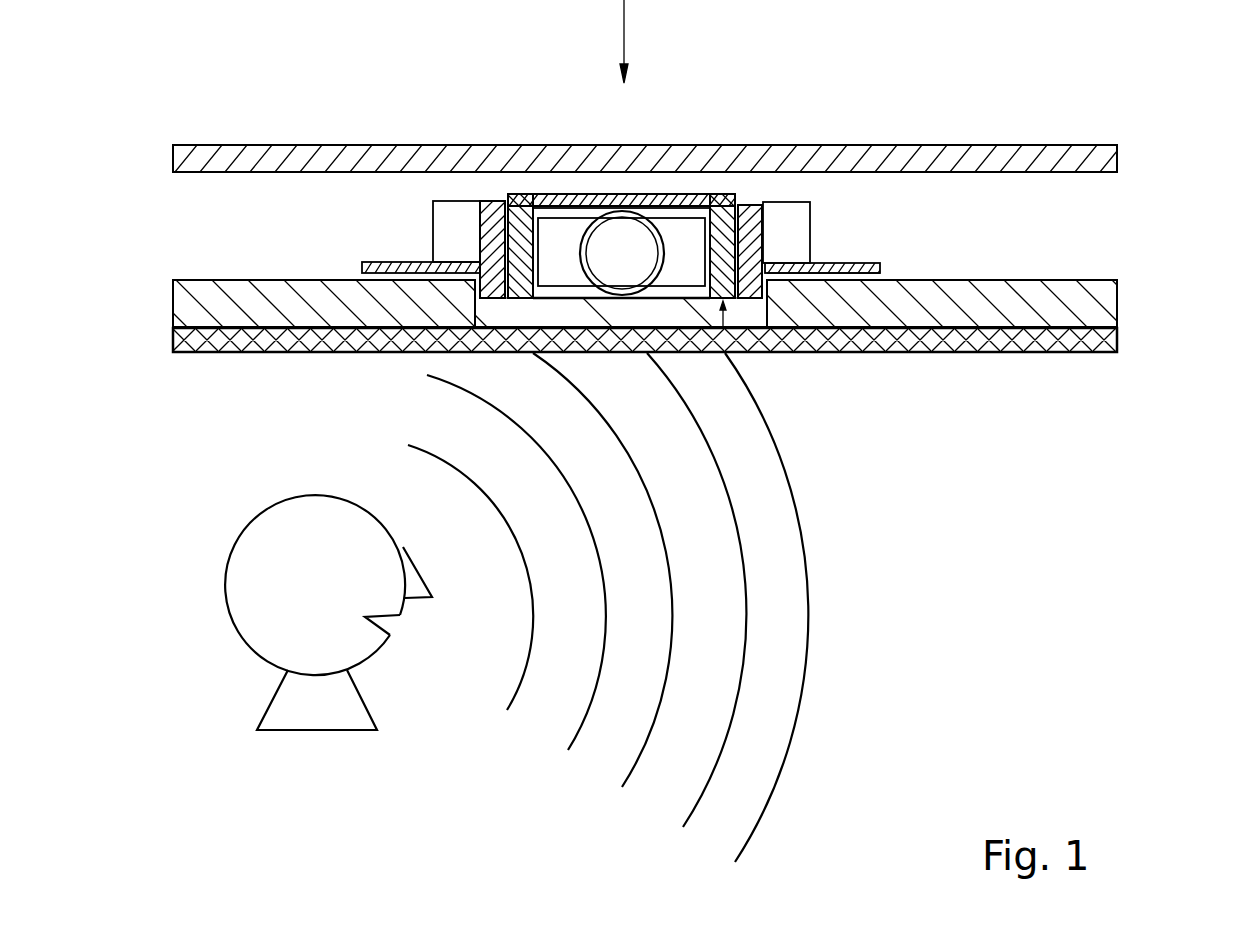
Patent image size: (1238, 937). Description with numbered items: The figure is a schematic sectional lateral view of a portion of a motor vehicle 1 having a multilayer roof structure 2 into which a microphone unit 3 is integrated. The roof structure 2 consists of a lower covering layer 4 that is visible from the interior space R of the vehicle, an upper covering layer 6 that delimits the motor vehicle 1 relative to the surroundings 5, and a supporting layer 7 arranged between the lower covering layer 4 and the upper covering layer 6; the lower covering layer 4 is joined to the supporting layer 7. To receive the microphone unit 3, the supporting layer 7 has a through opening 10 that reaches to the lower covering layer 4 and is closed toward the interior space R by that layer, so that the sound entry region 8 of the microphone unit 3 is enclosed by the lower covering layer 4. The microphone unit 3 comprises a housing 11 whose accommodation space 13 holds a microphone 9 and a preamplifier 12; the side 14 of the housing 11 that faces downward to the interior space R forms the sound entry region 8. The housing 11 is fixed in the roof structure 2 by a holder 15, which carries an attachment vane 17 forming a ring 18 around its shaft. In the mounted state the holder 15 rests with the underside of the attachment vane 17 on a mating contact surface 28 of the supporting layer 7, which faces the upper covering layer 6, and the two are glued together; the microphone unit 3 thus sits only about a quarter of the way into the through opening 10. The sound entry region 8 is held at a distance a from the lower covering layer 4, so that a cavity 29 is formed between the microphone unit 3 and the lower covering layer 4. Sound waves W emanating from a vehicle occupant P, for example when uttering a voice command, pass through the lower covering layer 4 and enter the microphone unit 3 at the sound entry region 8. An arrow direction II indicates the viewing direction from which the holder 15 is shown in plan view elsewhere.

The motor vehicle 1 is at (1062, 78).
The roof structure 2 is at (1127, 110).
The microphone unit 3 is at (878, 242).
The lower covering layer 4 is at (180, 342).
The surroundings 5 is at (431, 57).
The upper covering layer 6 is at (173, 152).
The supporting layer 7 is at (175, 300).
The sound entry region 8 is at (645, 305).
The microphone 9 is at (627, 235).
The through opening 10 is at (682, 346).
The housing 11 is at (731, 208).
The preamplifier 12 is at (680, 238).
The accommodation space 13 is at (563, 209).
The side of the housing 14 is at (565, 298).
The holder 15 is at (451, 228).
The attachment vane 17 is at (845, 263).
The ring 18 is at (418, 267).
The mating contact surface 28 is at (825, 279).
The cavity 29 is at (750, 310).
The distance a is at (723, 327).
The vehicle occupant P is at (268, 548).
The interior space R is at (922, 518).
The sound waves W is at (808, 668).
The arrow direction II is at (624, 32).